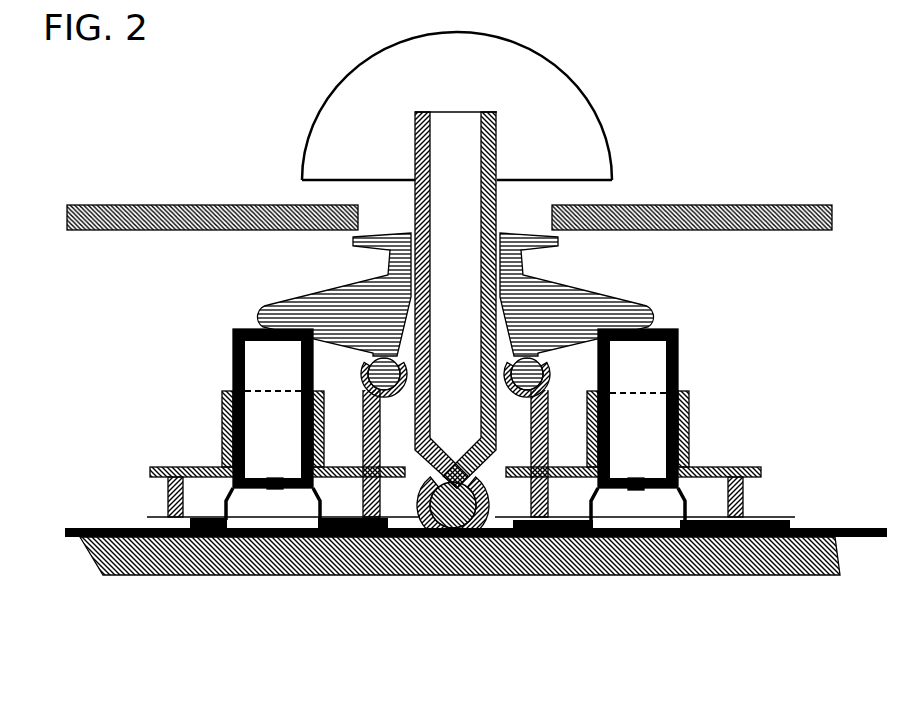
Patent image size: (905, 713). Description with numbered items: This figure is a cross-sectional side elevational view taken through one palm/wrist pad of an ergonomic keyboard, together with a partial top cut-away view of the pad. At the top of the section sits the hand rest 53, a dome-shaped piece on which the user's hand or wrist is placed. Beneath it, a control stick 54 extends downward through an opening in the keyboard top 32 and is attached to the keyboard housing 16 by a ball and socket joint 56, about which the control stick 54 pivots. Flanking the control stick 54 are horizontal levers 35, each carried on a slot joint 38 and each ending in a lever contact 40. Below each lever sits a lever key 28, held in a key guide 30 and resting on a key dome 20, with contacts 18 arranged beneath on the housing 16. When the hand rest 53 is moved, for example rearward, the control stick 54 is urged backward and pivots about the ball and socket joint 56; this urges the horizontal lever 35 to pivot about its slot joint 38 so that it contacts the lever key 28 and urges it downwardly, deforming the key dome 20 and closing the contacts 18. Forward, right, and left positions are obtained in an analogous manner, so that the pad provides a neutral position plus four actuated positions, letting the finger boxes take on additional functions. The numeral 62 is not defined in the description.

The keyboard housing 16 is at (807, 556).
The contacts 18 is at (288, 541).
The key dome 20 is at (270, 488).
The lever key 28 is at (230, 368).
The key guide 30 is at (222, 428).
The keyboard top 32 is at (147, 203).
The horizontal lever 35 is at (637, 298).
The slot joint 38 is at (545, 367).
The lever contact 40 is at (258, 313).
The hand rest 53 is at (552, 78).
The control stick 54 is at (692, 203).
The ball and socket joint 56 is at (525, 567).
The switch assembly 62 is at (790, 66).